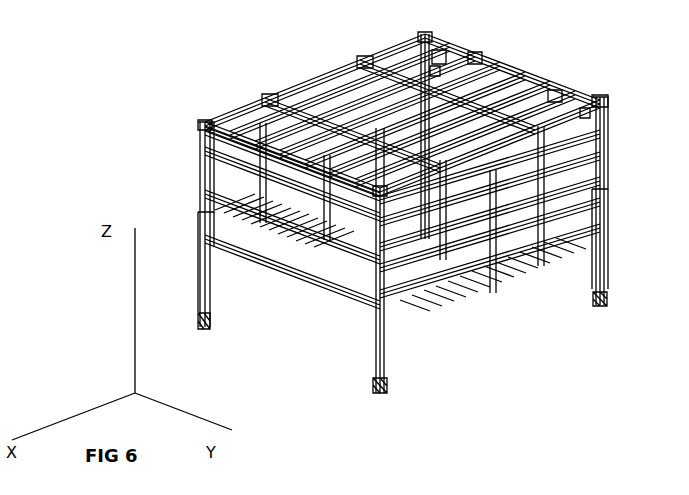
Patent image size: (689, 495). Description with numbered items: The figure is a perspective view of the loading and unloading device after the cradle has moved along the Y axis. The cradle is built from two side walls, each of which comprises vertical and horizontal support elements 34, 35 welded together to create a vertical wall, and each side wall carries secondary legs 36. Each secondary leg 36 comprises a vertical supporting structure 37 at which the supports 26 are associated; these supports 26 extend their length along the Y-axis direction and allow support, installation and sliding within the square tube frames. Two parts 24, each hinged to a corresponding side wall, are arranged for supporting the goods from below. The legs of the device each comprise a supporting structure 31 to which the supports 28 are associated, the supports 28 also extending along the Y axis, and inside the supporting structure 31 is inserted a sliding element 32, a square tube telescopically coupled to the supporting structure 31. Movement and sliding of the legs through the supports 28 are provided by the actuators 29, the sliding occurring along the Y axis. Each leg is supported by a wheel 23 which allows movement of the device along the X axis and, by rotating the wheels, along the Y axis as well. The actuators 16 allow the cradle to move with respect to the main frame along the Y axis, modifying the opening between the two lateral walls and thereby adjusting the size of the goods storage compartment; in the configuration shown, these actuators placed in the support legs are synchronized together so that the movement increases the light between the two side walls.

The actuators 16 is at (356, 54).
The wheel 23 is at (595, 306).
The parts for supporting the goods from below 24 is at (298, 246).
The supports 26 is at (410, 50).
The supports 28 is at (435, 66).
The actuators 29 is at (438, 52).
The supporting structure 31 is at (202, 152).
The sliding element 32 is at (212, 266).
The vertical and horizontal support elements 34 is at (502, 260).
The vertical and horizontal support elements 35 is at (550, 228).
The secondary legs 36 is at (208, 120).
The vertical supporting structure 37 is at (398, 58).